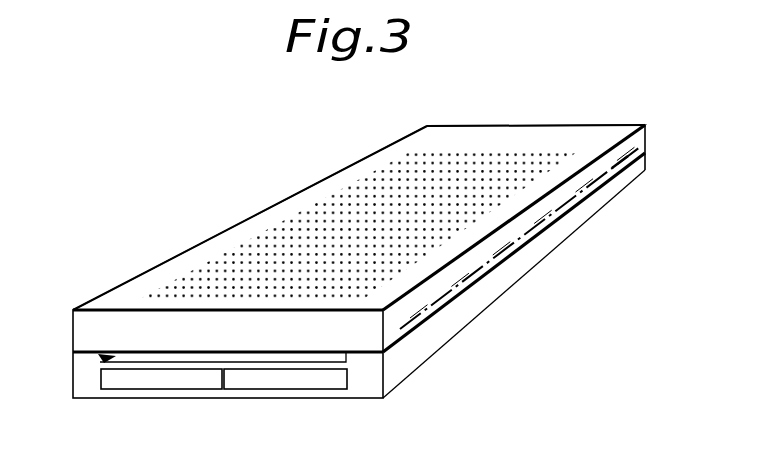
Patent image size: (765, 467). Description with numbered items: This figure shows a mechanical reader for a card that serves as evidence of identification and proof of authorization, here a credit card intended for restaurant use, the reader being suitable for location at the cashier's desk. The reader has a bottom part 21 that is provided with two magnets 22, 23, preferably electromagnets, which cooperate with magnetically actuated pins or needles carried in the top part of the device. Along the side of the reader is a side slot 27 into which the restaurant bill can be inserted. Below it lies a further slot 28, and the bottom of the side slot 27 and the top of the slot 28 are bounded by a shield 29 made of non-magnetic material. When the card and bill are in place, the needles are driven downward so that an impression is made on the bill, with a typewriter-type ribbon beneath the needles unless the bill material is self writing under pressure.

The bottom part 21 is at (522, 272).
The magnet 22 is at (318, 380).
The magnet 23 is at (130, 383).
The side slot 27 is at (600, 185).
The slot 28 is at (100, 362).
The shield 29 is at (400, 338).